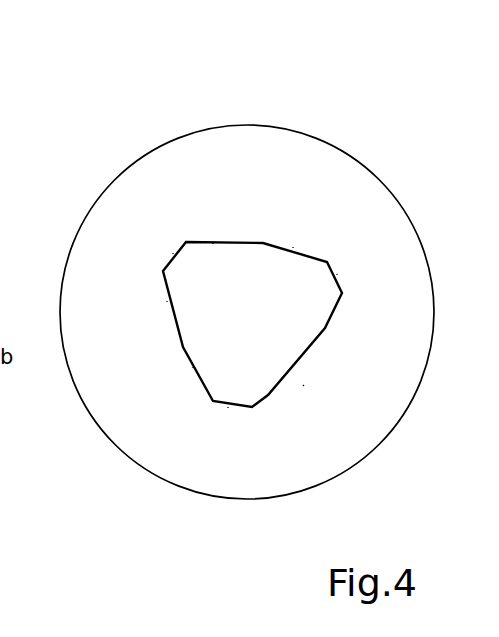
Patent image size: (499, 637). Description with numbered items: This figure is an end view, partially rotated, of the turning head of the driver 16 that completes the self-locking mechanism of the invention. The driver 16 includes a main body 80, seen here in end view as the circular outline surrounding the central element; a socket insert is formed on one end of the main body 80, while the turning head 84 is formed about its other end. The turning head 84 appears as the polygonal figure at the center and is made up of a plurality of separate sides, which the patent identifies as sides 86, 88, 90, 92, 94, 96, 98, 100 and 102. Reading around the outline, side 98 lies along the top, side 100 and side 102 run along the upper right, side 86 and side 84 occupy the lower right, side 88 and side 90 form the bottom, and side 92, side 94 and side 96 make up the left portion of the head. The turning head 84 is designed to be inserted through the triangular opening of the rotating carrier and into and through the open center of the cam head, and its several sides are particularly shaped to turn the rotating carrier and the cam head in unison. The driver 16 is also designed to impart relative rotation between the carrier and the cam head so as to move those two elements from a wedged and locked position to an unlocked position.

The driver 16 is at (272, 100).
The main body 80 is at (357, 161).
The turning head 84 is at (302, 385).
The side 86 is at (325, 327).
The side 88 is at (270, 393).
The side 90 is at (228, 407).
The side 92 is at (193, 367).
The side 94 is at (167, 301).
The side 96 is at (173, 253).
The side 98 is at (213, 243).
The side 100 is at (293, 247).
The side 102 is at (337, 275).